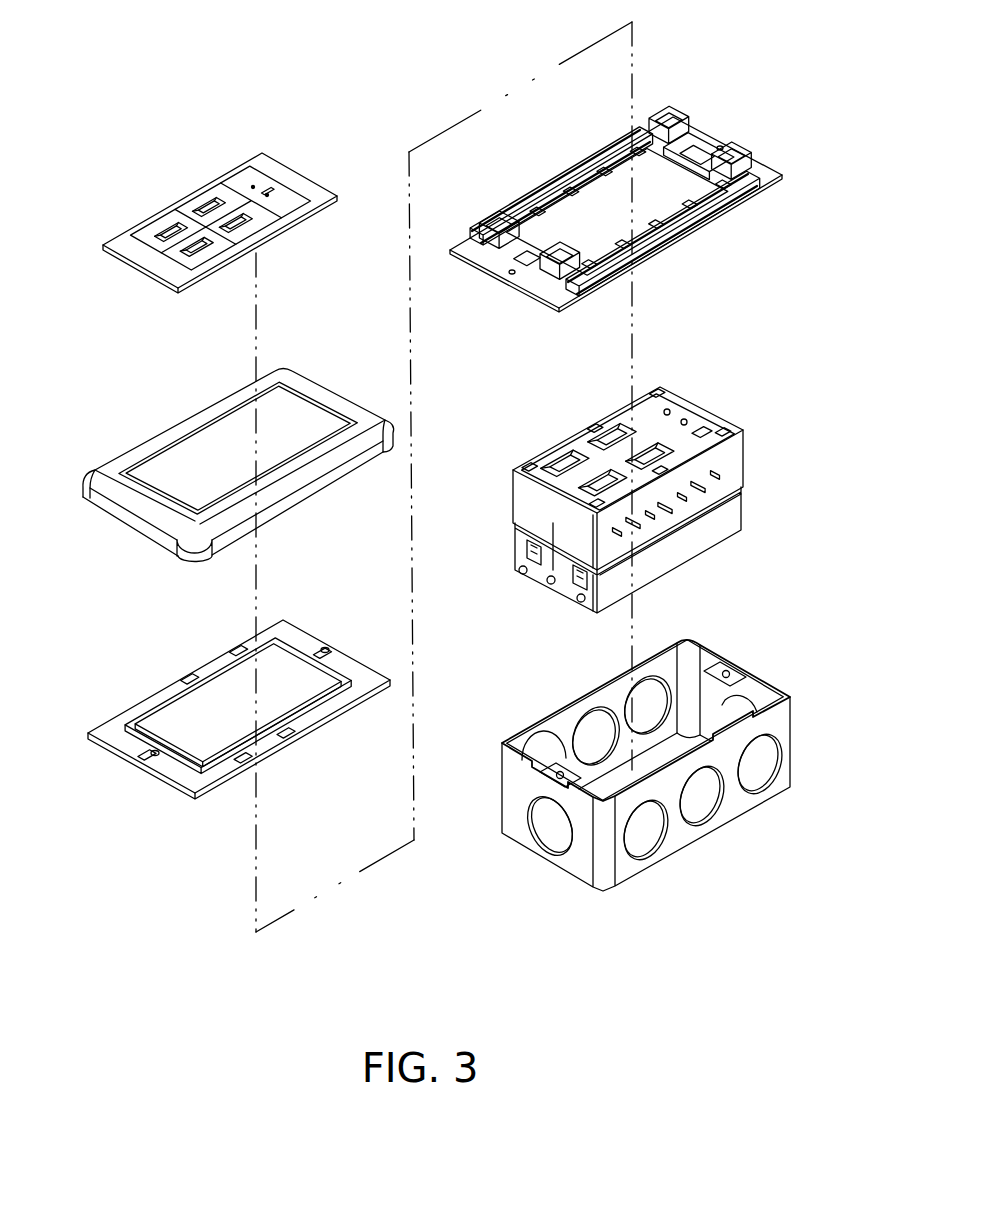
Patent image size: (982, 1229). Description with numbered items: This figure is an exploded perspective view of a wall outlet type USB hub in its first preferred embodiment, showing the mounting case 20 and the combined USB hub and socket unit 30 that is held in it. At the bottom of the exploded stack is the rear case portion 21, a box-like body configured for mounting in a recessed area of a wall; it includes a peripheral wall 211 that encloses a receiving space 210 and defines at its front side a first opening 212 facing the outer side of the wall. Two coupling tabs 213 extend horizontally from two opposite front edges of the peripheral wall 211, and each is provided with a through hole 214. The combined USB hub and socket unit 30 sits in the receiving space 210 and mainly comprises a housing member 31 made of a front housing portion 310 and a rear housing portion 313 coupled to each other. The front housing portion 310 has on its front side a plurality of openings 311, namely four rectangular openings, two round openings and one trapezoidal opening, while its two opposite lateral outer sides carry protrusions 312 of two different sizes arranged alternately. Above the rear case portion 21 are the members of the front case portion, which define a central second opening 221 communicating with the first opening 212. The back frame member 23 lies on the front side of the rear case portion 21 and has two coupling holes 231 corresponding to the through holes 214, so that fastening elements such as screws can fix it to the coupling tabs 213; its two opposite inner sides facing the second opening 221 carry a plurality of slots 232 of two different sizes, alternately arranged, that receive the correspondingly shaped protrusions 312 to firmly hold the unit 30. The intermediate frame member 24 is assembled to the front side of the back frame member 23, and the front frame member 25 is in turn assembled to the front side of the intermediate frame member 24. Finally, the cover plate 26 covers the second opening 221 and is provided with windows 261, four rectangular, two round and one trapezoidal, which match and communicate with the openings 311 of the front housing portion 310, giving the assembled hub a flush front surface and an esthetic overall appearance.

The mounting case 20 is at (90, 443).
The rear case portion 21 is at (603, 779).
The receiving space 210 is at (597, 743).
The peripheral wall 211 is at (583, 863).
The first opening 212 is at (533, 730).
The coupling tabs 213 is at (752, 680).
The through hole 214 is at (728, 663).
The second opening 221 is at (197, 455).
The back frame member 23 is at (616, 161).
The coupling holes 231 is at (695, 147).
The slots 232 is at (540, 190).
The intermediate frame member 24 is at (317, 642).
The front frame member 25 is at (315, 387).
The cover plate 26 is at (220, 182).
The windows 261 is at (200, 203).
The combined USB hub and socket unit 30 is at (520, 443).
The housing member 31 is at (641, 463).
The front housing portion 310 is at (613, 420).
The openings 311 is at (705, 431).
The protrusions 312 is at (720, 475).
The rear housing portion 313 is at (730, 520).